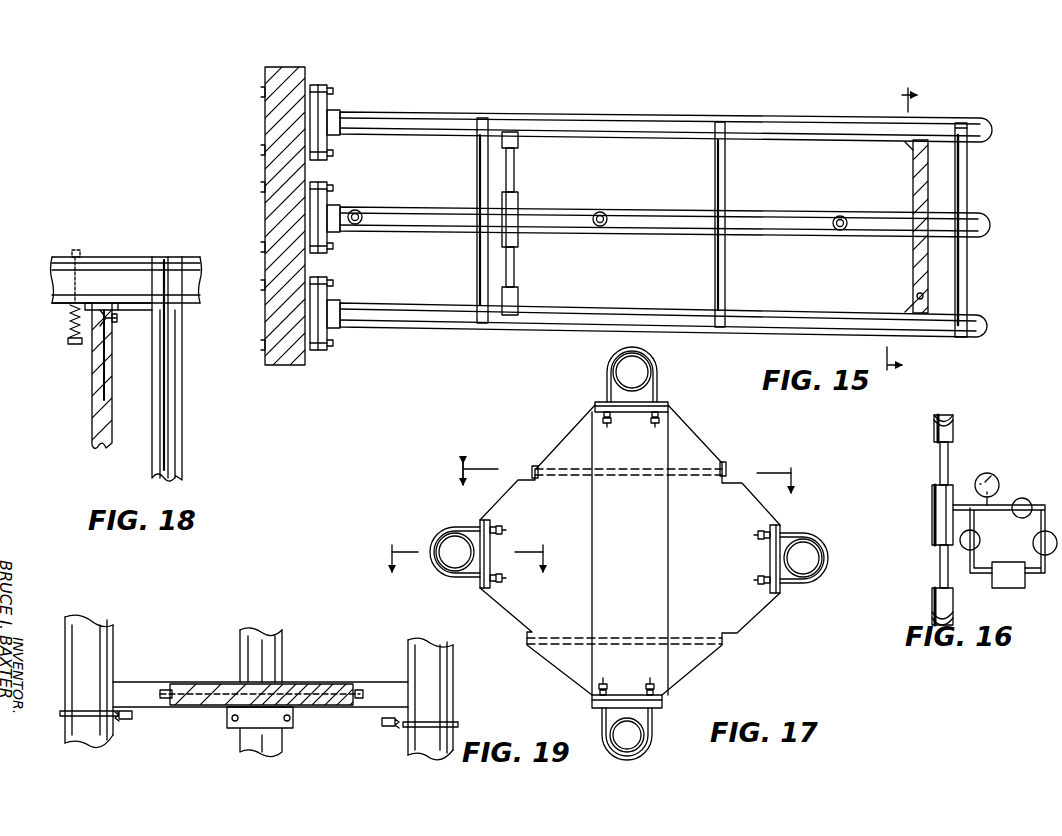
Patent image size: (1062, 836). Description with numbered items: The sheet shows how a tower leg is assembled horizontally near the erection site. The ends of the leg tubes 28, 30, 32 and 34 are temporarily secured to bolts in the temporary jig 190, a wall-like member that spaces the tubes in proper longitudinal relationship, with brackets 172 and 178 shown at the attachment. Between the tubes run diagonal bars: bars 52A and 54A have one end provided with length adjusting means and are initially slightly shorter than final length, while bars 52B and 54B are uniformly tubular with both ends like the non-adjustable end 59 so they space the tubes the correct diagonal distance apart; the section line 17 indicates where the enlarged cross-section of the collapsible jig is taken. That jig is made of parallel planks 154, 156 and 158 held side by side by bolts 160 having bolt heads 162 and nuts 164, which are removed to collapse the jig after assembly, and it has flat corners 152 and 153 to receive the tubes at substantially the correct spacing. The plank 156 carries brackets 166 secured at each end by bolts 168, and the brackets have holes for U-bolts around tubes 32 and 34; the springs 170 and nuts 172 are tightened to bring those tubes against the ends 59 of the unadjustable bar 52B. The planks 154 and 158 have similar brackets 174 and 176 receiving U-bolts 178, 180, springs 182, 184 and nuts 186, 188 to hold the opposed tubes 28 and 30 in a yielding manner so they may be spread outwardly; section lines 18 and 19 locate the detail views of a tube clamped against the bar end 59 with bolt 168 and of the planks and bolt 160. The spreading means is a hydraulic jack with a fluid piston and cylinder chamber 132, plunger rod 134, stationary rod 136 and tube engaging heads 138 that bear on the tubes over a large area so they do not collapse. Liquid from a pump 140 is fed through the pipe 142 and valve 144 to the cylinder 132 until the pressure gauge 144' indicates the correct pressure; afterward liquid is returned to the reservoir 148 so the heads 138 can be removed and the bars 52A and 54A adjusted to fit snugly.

In FIG. 15, the temporary jig 190 is at (284, 67).
In FIG. 15, the U-bolt 178 is at (314, 83).
In FIG. 17, the U-bolt 178 is at (782, 543).
In FIG. 15, the nut 172 is at (322, 86).
In FIG. 17, the nut 172 is at (619, 420).
In FIG. 15, the tube 32 is at (513, 116).
In FIG. 18, the tube 32 is at (98, 276).
In FIG. 17, the tube 32 is at (627, 371).
In FIG. 16, the tube 32 is at (950, 417).
In FIG. 15, the tube 28 is at (378, 214).
In FIG. 17, the tube 28 is at (455, 545).
In FIG. 19, the tube 28 is at (108, 735).
In FIG. 15, the tube 34 is at (402, 318).
In FIG. 17, the tube 34 is at (633, 740).
In FIG. 19, the tube 34 is at (256, 640).
In FIG. 16, the tube 34 is at (944, 622).
In FIG. 15, the adjustable bar 52A is at (478, 156).
In FIG. 15, the non-adjustable bar 52B is at (968, 186).
In FIG. 18, the non-adjustable bar 52B is at (182, 362).
In FIG. 15, the tube engaging head 138 is at (518, 139).
In FIG. 16, the tube engaging head 138 is at (933, 432).
In FIG. 15, the stationary rod 136 is at (516, 178).
In FIG. 16, the stationary rod 136 is at (940, 462).
In FIG. 15, the fluid piston and cylinder chamber 132 is at (517, 205).
In FIG. 16, the fluid piston and cylinder chamber 132 is at (932, 500).
In FIG. 15, the plunger rod 134 is at (514, 268).
In FIG. 18, the plunger rod 134 is at (91, 450).
In FIG. 16, the plunger rod 134 is at (940, 565).
In FIG. 15, the non-adjustable bar 54B is at (358, 225).
In FIG. 15, the adjustable bar 54A is at (835, 232).
In FIG. 15, the section line 17— 17 is at (915, 232).
In FIG. 17, the section line 18— 18 is at (461, 572).
In FIG. 17, the section line 19— 19 is at (623, 492).
In FIG. 18, the spring 170 is at (76, 255).
In FIG. 17, the spring 170 is at (648, 368).
In FIG. 18, the flat corner 152 is at (92, 302).
In FIG. 17, the flat corner 152 is at (660, 401).
In FIG. 18, the bracket 166 is at (68, 306).
In FIG. 17, the bracket 166 is at (669, 405).
In FIG. 17, the nut 164 is at (537, 466).
In FIG. 17, the bolt head 162 is at (726, 472).
In FIG. 17, the bolt 160 is at (650, 476).
In FIG. 19, the bolt 160 is at (318, 690).
In FIG. 17, the plank 156 is at (655, 536).
In FIG. 19, the plank 156 is at (291, 682).
In FIG. 17, the plank 158 is at (577, 541).
In FIG. 19, the plank 158 is at (178, 684).
In FIG. 17, the plank 154 is at (698, 449).
In FIG. 19, the plank 154 is at (346, 684).
In FIG. 17, the flat corner 153 is at (779, 528).
In FIG. 17, the bracket 176 is at (479, 592).
In FIG. 17, the U-bolt 180 is at (450, 581).
In FIG. 17, the spring 184 is at (500, 528).
In FIG. 17, the nut 188 is at (501, 580).
In FIG. 17, the nut 186 is at (752, 541).
In FIG. 17, the spring 182 is at (752, 580).
In FIG. 17, the bracket 174 is at (768, 598).
In FIG. 17, the tube 30 is at (806, 561).
In FIG. 19, the tube 30 is at (408, 741).
In FIG. 18, the bar end 59 is at (182, 276).
In FIG. 18, the bolt 168 is at (108, 318).
In FIG. 16, the pipe 142 is at (1046, 500).
In FIG. 16, the valve 144 is at (996, 525).
In FIG. 16, the pressure gauge 144' is at (1014, 483).
In FIG. 16, the pump 140 is at (1048, 556).
In FIG. 16, the reservoir 148 is at (1010, 585).